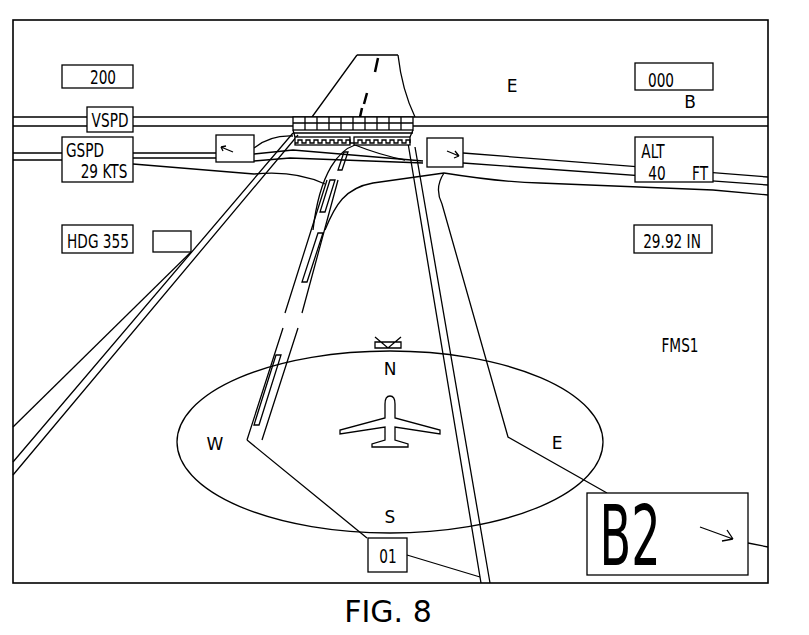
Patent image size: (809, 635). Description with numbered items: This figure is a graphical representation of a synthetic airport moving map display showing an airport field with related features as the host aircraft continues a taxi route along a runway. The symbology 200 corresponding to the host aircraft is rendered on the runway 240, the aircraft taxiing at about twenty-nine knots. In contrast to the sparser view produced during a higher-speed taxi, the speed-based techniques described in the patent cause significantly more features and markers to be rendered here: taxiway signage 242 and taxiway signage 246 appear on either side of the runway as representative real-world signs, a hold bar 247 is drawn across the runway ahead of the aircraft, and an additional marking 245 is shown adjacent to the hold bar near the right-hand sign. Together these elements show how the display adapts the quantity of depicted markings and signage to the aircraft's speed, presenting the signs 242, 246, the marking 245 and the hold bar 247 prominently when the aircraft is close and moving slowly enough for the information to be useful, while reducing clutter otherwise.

The symbology corresponding to host aircraft 200 is at (382, 412).
The runway 240 is at (358, 295).
The taxiway signage 242 is at (223, 163).
The runway crossing marking 245 is at (414, 140).
The taxiway signage 246 is at (443, 170).
The hold bar 247 is at (322, 117).